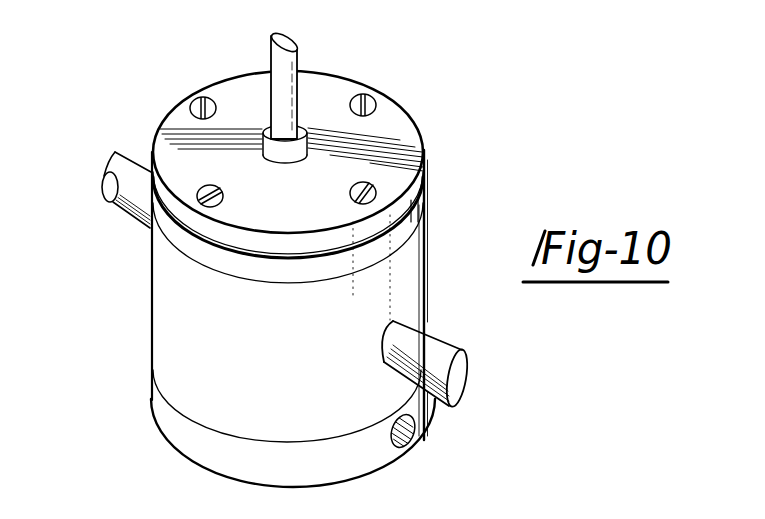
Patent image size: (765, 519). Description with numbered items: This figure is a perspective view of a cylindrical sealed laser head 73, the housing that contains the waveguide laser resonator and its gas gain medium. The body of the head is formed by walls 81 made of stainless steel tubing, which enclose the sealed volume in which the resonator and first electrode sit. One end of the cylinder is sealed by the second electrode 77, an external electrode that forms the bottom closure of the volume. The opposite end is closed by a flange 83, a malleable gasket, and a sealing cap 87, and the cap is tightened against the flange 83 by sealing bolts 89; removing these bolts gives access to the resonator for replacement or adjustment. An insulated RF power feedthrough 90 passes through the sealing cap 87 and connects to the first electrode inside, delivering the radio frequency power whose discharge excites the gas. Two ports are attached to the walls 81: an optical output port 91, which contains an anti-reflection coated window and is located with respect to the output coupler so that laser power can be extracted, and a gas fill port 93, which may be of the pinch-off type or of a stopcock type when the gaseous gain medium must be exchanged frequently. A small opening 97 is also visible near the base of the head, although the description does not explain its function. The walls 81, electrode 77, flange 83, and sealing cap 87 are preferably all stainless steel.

The sealed laser head 73 is at (140, 390).
The second electrode 77 is at (373, 472).
The walls 81 is at (407, 281).
The flange 83 is at (417, 218).
The sealing cap 87 is at (418, 146).
The sealing bolts 89 is at (376, 92).
The insulated RF power feedthrough 90 is at (300, 62).
The optical output port 91 is at (443, 353).
The gas fill port 93 is at (125, 167).
The mounting hole 97 is at (420, 441).